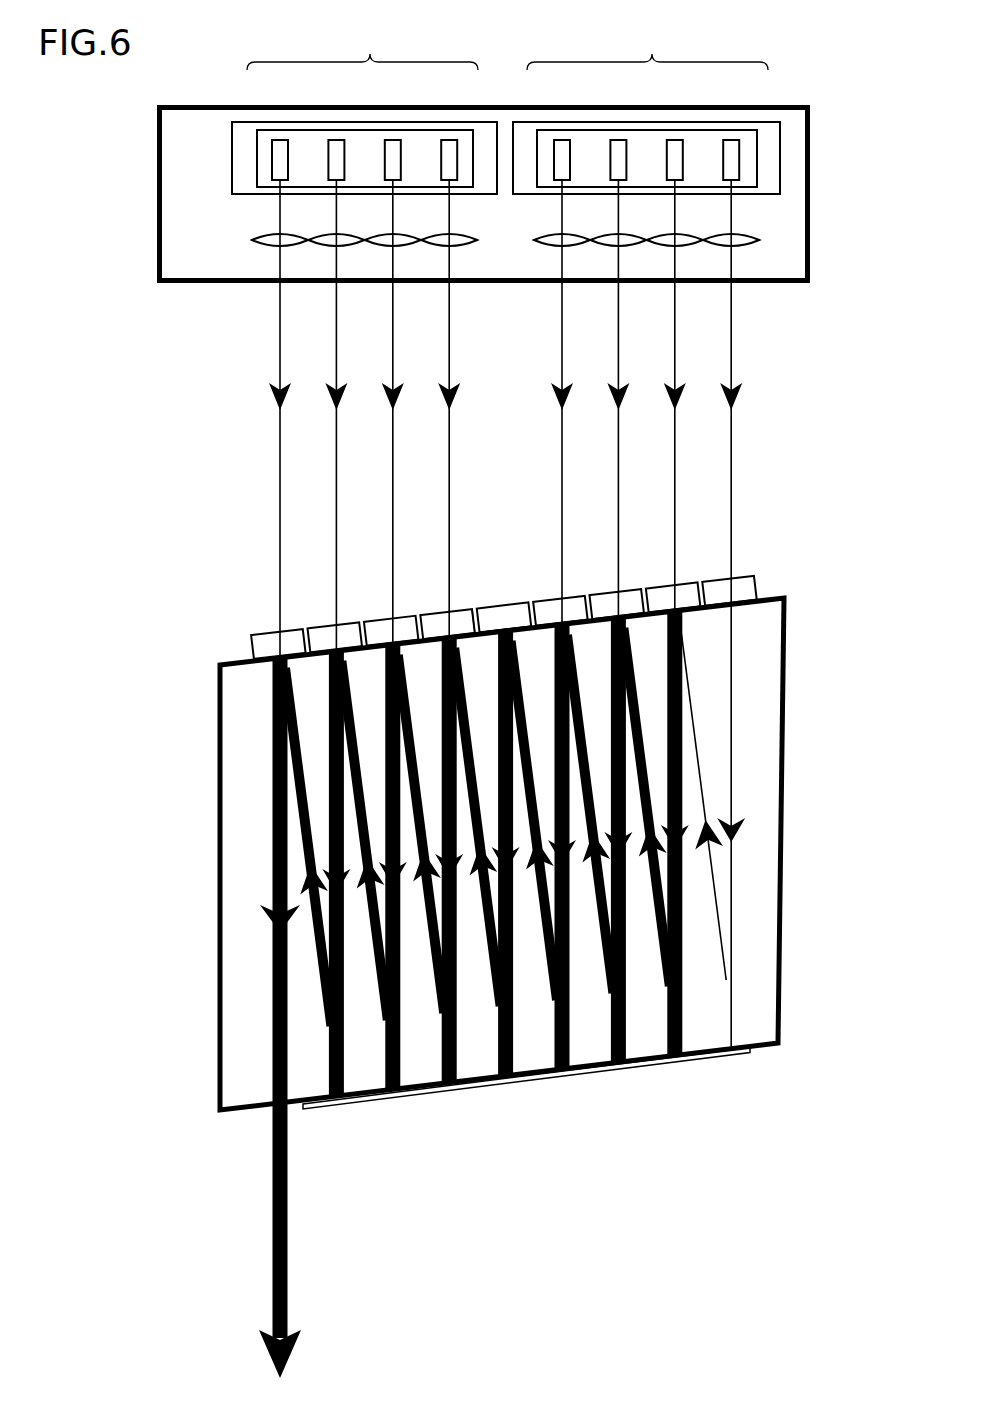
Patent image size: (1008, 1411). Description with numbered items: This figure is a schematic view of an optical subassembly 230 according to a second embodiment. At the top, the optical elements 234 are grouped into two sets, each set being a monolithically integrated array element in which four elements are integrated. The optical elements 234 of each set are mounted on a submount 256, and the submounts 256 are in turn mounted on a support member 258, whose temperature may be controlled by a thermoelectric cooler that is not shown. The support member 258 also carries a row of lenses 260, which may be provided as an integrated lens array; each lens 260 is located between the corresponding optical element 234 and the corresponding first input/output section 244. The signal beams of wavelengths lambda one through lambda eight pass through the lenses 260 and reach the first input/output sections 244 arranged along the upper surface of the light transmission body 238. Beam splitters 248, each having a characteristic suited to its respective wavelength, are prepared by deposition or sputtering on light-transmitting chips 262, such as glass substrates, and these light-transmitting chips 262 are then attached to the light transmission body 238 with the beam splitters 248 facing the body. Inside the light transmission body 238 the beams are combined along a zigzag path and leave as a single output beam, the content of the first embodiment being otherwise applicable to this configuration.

The optical subassembly 230 is at (221, 518).
The optical element 234 is at (449, 143).
The light transmission body 238 is at (220, 960).
The first input/output section 244 is at (280, 658).
The beam splitter 248 is at (463, 628).
The submount 256 is at (232, 160).
The support member 258 is at (812, 243).
The lens 260 is at (268, 250).
The light-transmitting chip 262 is at (458, 603).